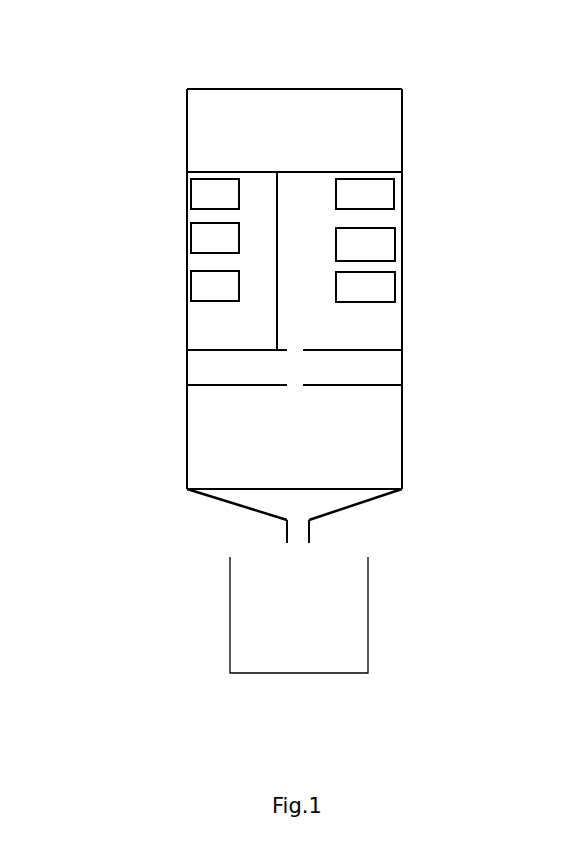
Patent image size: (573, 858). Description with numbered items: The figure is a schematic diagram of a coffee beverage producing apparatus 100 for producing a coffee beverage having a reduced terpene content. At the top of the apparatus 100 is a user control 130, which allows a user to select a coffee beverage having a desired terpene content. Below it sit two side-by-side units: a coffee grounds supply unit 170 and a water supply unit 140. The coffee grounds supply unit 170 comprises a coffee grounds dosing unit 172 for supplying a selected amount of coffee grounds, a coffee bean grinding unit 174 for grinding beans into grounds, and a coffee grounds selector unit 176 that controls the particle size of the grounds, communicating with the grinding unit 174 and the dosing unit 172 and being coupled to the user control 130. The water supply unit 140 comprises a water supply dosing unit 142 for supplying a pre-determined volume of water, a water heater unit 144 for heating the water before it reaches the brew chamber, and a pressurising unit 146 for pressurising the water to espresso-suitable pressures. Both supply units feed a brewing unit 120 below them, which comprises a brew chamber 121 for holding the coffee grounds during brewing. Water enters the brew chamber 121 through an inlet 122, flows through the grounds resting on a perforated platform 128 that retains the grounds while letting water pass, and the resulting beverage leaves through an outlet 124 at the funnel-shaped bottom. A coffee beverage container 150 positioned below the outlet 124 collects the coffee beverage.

The apparatus 100 is at (156, 130).
The user control 130 is at (280, 142).
The coffee grounds supply unit 170 is at (204, 341).
The coffee grounds dosing unit 172 is at (232, 207).
The coffee bean grinding unit 174 is at (232, 251).
The coffee grounds selector unit 176 is at (232, 299).
The water supply unit 140 is at (349, 336).
The water supply dosing unit 142 is at (386, 207).
The water heater unit 144 is at (384, 257).
The pressurising unit 146 is at (384, 300).
The brewing unit 120 is at (138, 350).
The inlet 122 is at (303, 385).
The brew chamber 121 is at (285, 449).
The platform 128 is at (347, 489).
The outlet 124 is at (305, 545).
The coffee beverage container 150 is at (368, 642).